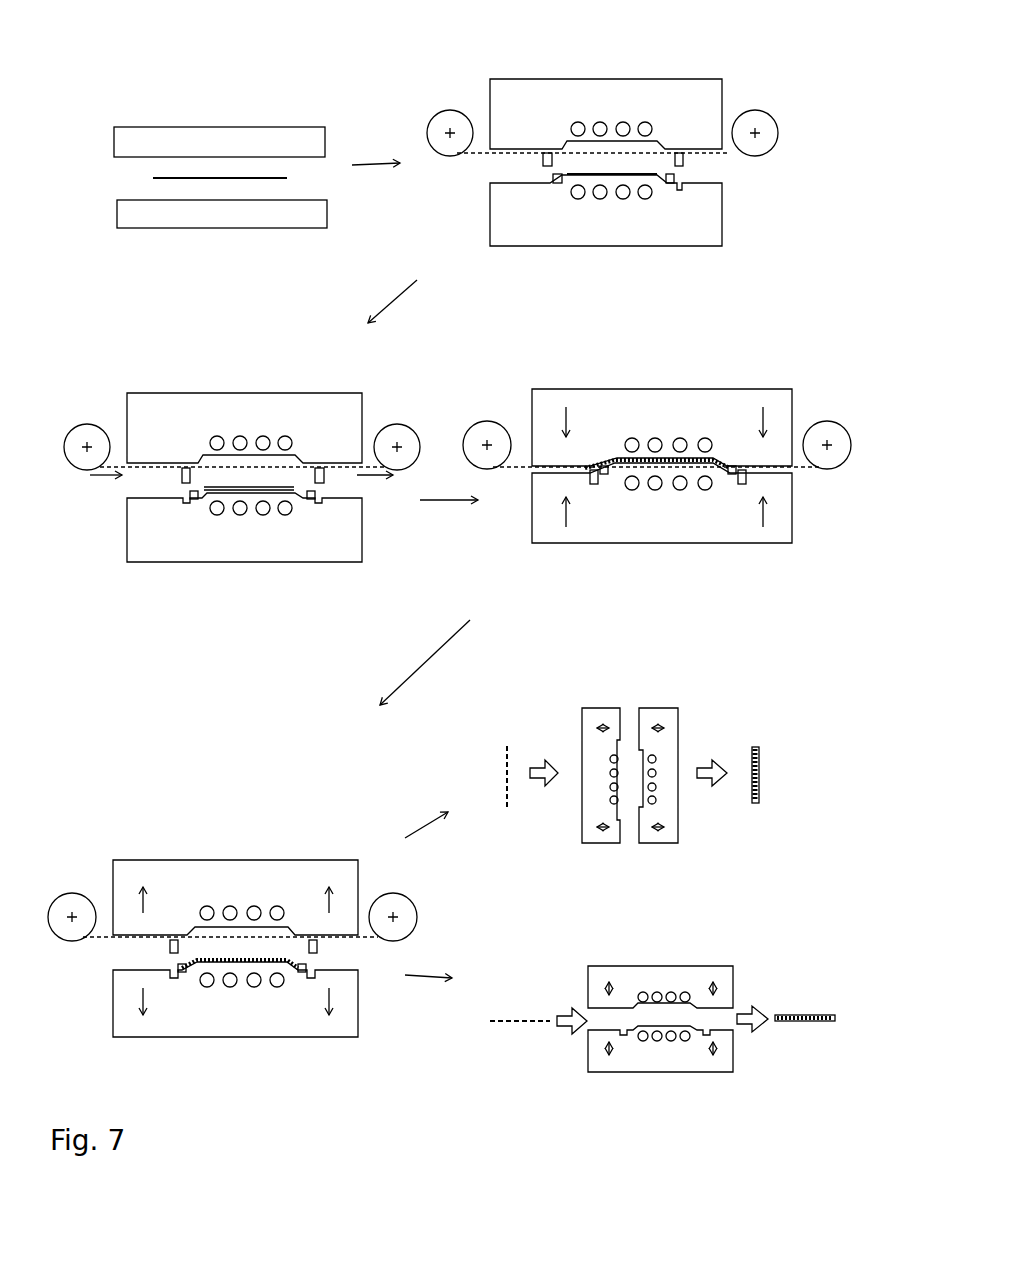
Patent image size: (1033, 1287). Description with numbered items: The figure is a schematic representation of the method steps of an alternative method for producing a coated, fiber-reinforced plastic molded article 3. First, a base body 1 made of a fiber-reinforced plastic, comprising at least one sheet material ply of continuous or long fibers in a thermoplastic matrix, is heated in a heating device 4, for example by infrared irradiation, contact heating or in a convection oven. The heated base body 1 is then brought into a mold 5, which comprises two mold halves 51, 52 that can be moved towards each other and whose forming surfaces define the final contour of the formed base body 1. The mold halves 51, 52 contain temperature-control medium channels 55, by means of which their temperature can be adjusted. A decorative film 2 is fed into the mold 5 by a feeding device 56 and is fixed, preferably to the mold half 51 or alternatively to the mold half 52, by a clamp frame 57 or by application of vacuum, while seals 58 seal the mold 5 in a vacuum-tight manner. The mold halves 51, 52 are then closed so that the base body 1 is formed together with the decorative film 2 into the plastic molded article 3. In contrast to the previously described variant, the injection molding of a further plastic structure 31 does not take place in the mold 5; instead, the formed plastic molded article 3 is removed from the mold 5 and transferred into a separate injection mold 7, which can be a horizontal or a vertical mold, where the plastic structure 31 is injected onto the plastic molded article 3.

The base body 1 is at (193, 178).
The decorative film 2 is at (467, 155).
The plastic molded article 3 is at (272, 968).
The plastic structure 31 is at (752, 790).
The heating device 4 is at (277, 93).
The mold 5 is at (678, 56).
The injection mold 7 is at (700, 698).
The mold half 51 is at (708, 87).
The mold half 52 is at (718, 218).
The temperature-control medium channels 55 is at (643, 123).
The feeding device 56 is at (450, 110).
The clamp frame 57 is at (543, 160).
The seals 58 is at (555, 184).